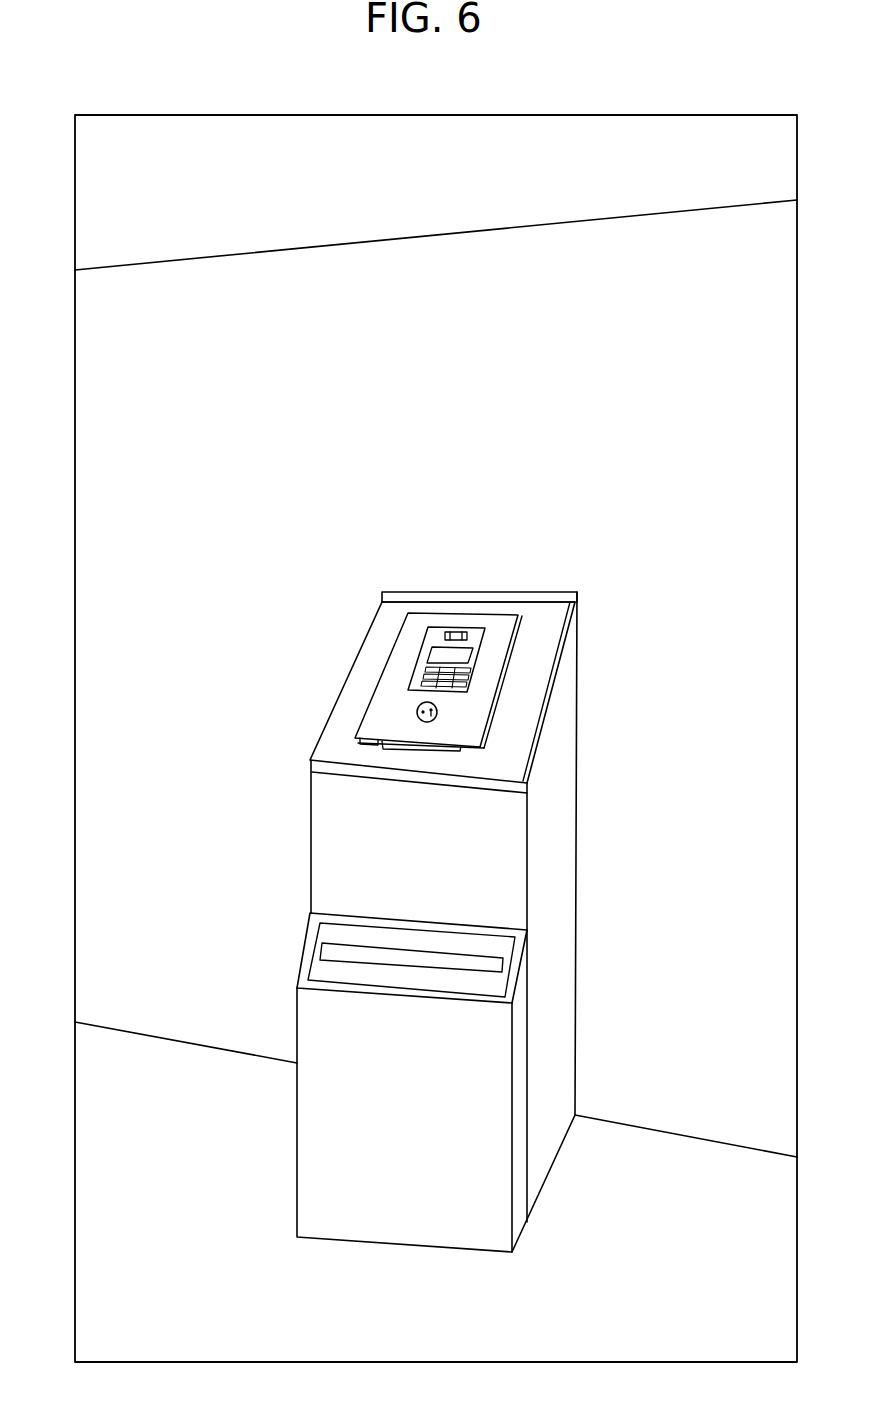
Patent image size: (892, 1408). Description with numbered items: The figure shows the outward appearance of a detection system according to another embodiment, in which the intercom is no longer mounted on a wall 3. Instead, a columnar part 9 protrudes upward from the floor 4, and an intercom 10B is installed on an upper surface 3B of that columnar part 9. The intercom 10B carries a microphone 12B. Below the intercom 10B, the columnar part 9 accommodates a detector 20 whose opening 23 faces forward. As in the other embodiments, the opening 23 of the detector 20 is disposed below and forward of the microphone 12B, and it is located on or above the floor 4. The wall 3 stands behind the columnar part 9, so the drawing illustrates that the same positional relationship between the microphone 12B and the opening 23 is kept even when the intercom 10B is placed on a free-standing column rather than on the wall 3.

The wall 3 is at (146, 462).
The floor 4 is at (143, 1208).
The columnar part 9 is at (452, 922).
The upper surface 3B is at (522, 727).
The intercom 10B is at (500, 635).
The microphone 12B is at (437, 708).
The opening 23 is at (322, 951).
The detector 20 is at (297, 1102).